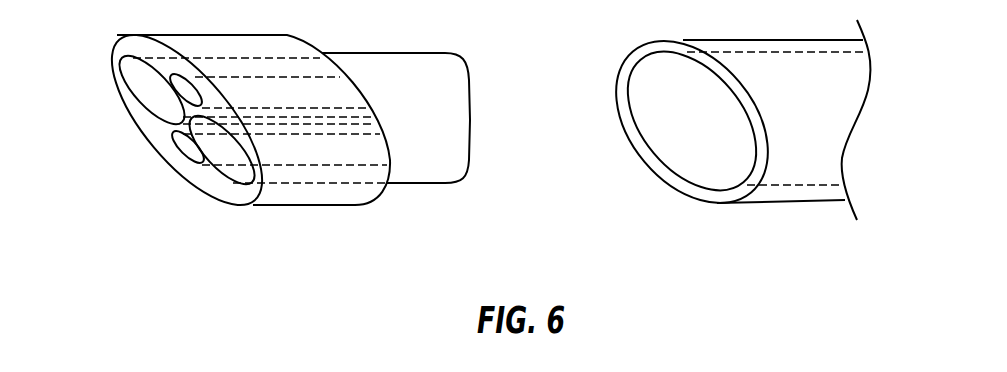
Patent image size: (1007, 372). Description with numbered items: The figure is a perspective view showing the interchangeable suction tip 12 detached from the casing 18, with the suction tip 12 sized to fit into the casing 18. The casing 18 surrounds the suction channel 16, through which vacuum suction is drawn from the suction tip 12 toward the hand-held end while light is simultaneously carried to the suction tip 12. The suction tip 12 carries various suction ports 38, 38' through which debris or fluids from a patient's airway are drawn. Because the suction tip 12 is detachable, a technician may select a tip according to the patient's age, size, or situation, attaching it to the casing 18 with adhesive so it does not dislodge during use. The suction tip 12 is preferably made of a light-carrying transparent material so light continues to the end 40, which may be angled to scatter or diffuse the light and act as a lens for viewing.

The suction tip 12 is at (318, 230).
The suction channel 16 is at (650, 115).
The casing 18 is at (295, 45).
The suction port 38 is at (133, 90).
The suction port 38' is at (199, 162).
The end of suction tip 40 is at (124, 45).